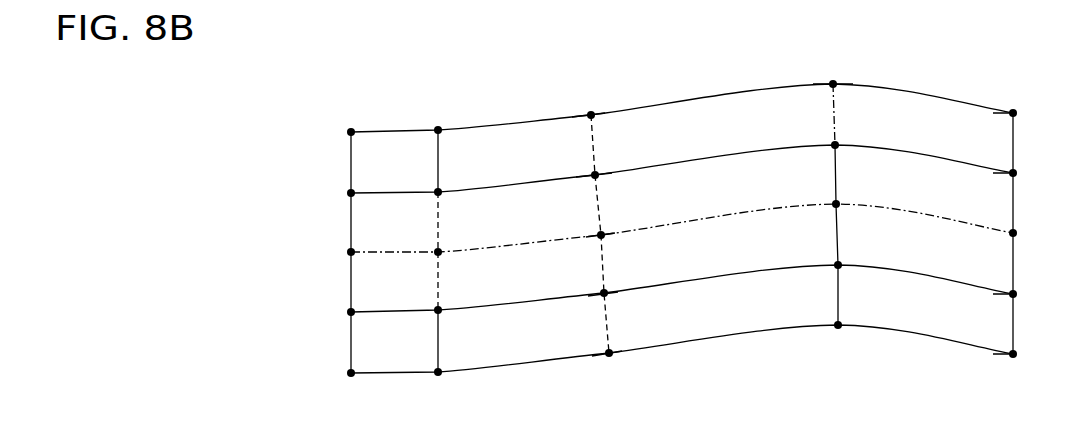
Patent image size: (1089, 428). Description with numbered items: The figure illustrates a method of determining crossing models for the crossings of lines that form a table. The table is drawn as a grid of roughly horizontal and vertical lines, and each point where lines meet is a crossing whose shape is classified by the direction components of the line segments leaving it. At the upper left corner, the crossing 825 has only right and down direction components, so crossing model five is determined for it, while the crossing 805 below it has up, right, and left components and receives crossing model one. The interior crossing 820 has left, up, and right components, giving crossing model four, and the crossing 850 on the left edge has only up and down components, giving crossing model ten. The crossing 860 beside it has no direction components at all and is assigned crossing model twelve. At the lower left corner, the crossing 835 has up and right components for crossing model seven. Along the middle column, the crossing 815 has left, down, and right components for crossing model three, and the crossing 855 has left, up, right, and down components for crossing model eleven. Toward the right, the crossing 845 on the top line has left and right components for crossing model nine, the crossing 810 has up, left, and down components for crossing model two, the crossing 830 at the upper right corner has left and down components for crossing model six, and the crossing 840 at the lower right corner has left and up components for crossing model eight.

The crossing 805 is at (353, 191).
The crossing 810 is at (838, 202).
The crossing 815 is at (593, 113).
The crossing 820 is at (440, 190).
The crossing 825 is at (353, 130).
The crossing 830 is at (1015, 111).
The crossing 835 is at (353, 371).
The crossing 840 is at (1015, 352).
The crossing 845 is at (835, 82).
The crossing 850 is at (353, 250).
The crossing 855 is at (597, 173).
The crossing 860 is at (440, 250).